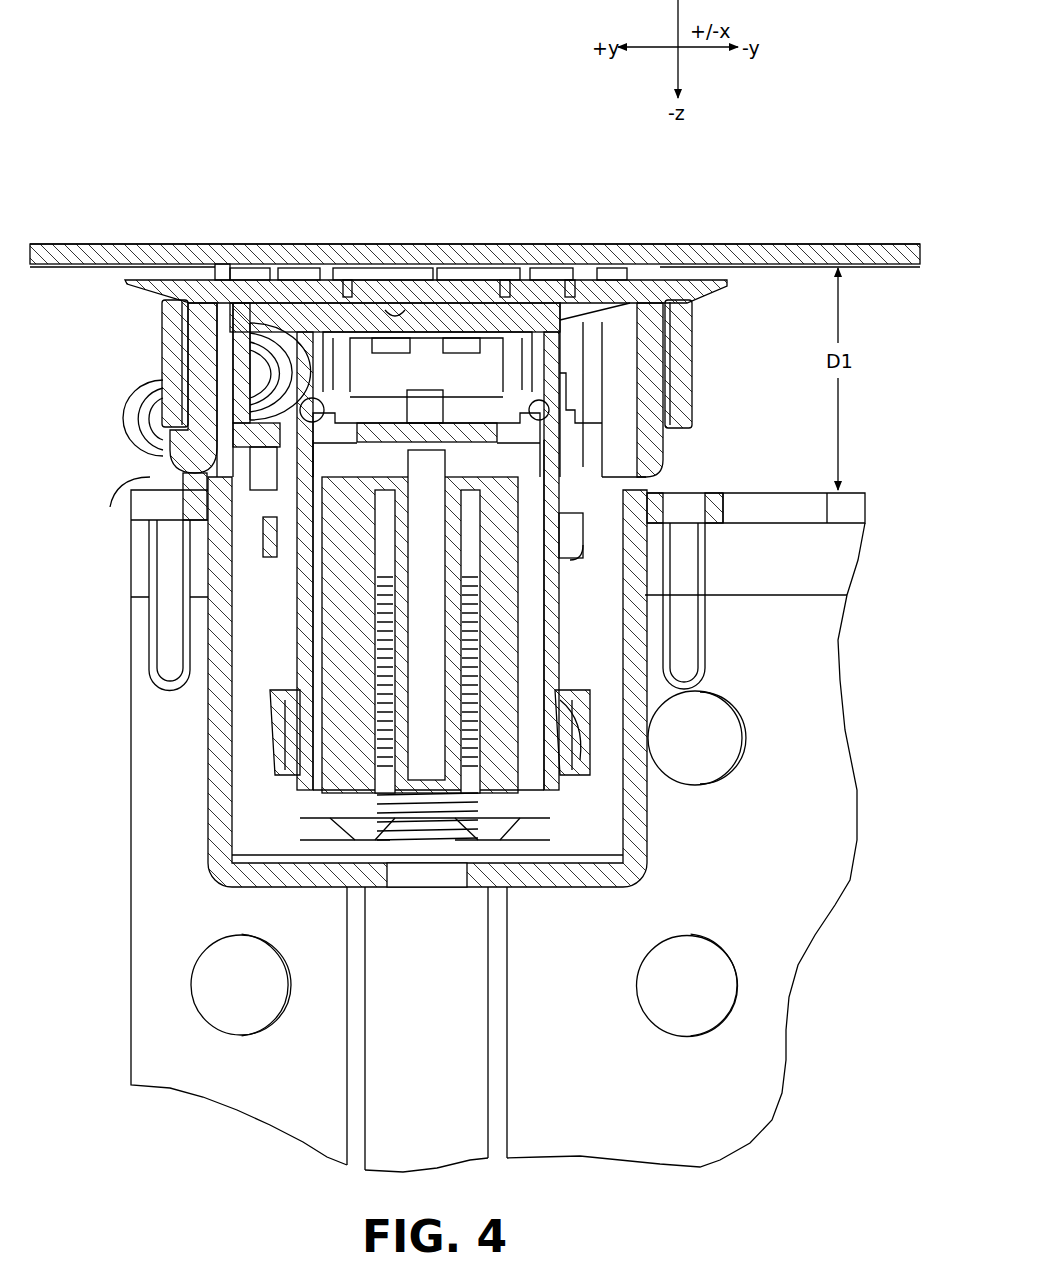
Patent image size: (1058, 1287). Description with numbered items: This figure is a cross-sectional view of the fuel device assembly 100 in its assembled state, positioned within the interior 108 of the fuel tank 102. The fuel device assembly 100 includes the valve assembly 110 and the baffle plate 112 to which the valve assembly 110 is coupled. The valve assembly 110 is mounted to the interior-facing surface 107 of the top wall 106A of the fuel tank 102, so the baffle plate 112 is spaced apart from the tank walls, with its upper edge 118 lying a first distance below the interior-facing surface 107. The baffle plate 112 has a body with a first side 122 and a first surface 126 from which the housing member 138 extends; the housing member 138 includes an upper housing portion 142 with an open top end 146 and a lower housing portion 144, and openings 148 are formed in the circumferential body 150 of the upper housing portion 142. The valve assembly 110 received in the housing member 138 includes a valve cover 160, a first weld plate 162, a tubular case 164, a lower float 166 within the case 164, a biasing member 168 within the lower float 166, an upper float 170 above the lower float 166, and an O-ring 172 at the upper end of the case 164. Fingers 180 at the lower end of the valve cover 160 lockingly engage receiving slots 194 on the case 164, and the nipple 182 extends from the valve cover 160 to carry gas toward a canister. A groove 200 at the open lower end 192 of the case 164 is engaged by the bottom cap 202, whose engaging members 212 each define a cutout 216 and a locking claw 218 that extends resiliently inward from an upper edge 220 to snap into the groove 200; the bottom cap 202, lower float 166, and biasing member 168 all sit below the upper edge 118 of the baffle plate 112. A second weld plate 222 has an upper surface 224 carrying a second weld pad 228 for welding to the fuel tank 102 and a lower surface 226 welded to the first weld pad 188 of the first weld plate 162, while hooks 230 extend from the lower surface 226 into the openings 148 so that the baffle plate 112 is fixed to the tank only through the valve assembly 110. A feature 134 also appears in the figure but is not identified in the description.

The fuel device assembly 100 is at (76, 663).
The fuel tank 102 is at (147, 243).
The top wall 106A is at (470, 243).
The interior-facing surface 107 is at (112, 268).
The interior 108 is at (76, 456).
The valve assembly 110 is at (247, 662).
The baffle plate 112 is at (880, 688).
The upper edge 118 is at (759, 492).
The first side 122 is at (130, 832).
The first surface 126 is at (803, 897).
The opening 134 is at (240, 1036).
The housing member 138 is at (196, 858).
The upper housing portion 142 is at (163, 322).
The lower housing portion 144 is at (217, 800).
The open top end 146 is at (690, 297).
The openings 148 is at (148, 492).
The circumferential body 150 is at (160, 360).
The valve cover 160 is at (558, 357).
The first weld plate 162 is at (608, 324).
The case 164 is at (565, 588).
The lower float 166 is at (503, 641).
The biasing member 168 is at (495, 740).
The upper float 170 is at (356, 456).
The O-ring 172 is at (548, 410).
The fingers 180 is at (567, 498).
The nipple 182 is at (127, 415).
The first weld pad 188 is at (348, 284).
The lower end 192 is at (550, 813).
The receiving slots 194 is at (587, 538).
The groove 200 is at (300, 728).
The bottom cap 202 is at (575, 841).
The engaging members 212 is at (600, 731).
The cutout 216 is at (568, 808).
The locking claw 218 is at (575, 743).
The upper edge 220 is at (582, 688).
The second weld plate 222 is at (668, 282).
The upper surface 224 is at (598, 272).
The lower surface 226 is at (393, 312).
The second weld pad 228 is at (328, 267).
The hooks 230 is at (673, 445).